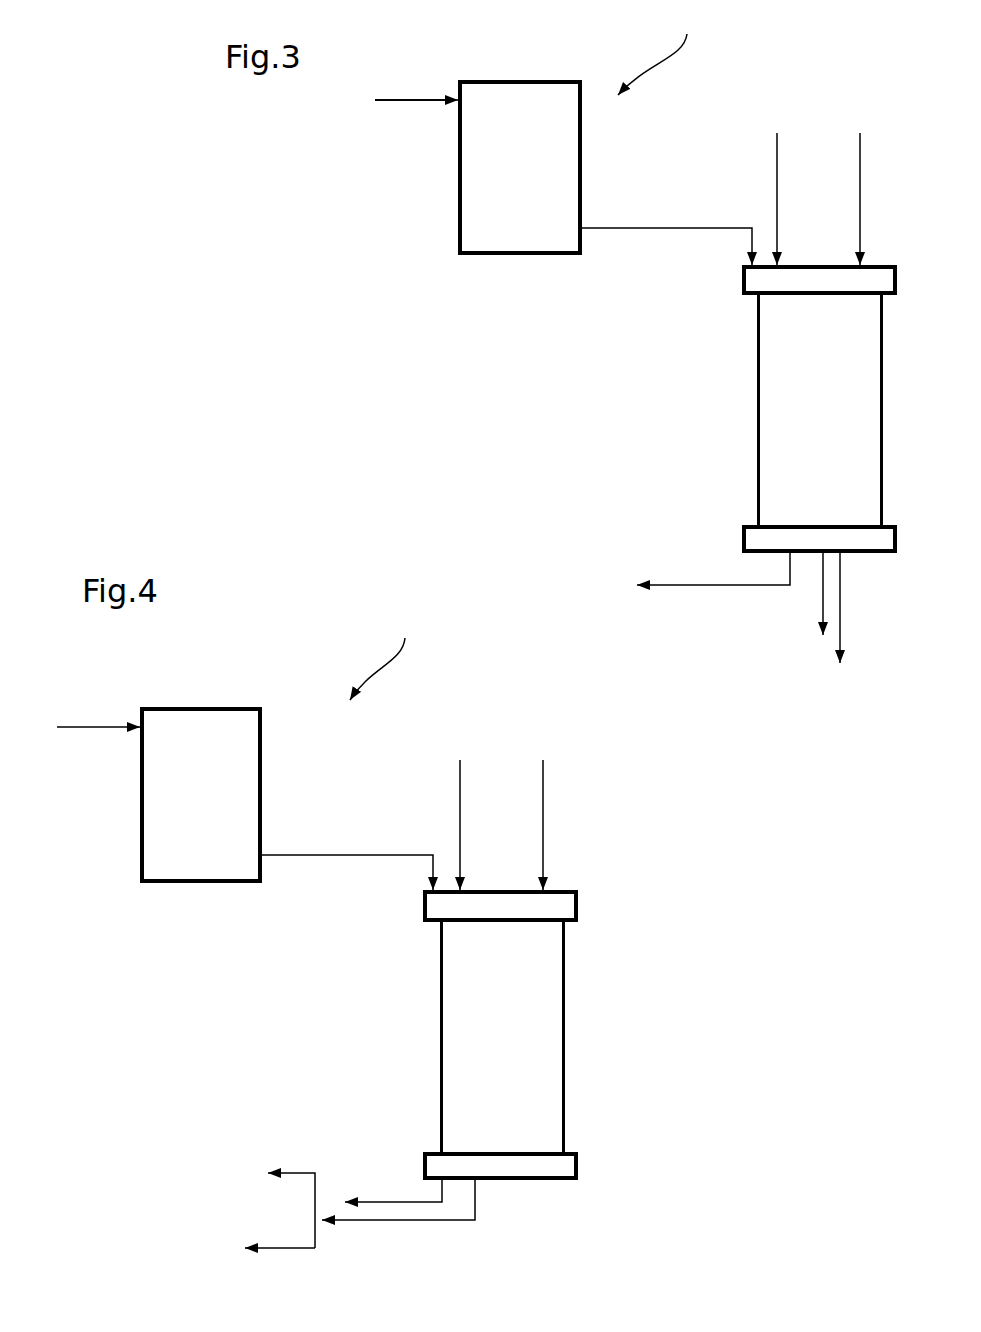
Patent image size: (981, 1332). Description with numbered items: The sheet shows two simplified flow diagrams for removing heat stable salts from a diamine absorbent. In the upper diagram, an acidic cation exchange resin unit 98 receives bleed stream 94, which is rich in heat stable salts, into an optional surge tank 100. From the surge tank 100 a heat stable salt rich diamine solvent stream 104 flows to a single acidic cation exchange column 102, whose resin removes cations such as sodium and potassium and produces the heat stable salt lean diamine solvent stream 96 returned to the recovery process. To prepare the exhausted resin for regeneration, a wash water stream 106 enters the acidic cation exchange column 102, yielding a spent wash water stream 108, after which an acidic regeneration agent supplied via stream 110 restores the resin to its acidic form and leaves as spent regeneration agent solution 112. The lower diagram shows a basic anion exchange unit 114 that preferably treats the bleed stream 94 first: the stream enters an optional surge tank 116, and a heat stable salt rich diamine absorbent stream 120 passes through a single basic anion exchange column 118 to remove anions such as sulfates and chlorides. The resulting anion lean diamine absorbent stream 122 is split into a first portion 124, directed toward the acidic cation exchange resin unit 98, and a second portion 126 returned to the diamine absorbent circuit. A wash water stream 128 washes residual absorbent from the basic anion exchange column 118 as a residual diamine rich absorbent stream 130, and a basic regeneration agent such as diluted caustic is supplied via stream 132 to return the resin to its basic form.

In FIG. 3, the bleed stream 94 is at (416, 118).
In FIG. 4, the bleed stream 94 is at (81, 729).
In FIG. 3, the heat stable salt lean diamine solvent stream 96 is at (695, 578).
In FIG. 3, the acidic cation exchange resin unit 98 is at (660, 52).
In FIG. 3, the surge tank 100 is at (538, 185).
In FIG. 3, the acidic cation exchange column 102 is at (837, 413).
In FIG. 3, the heat stable salt rich diamine solvent stream 104 is at (666, 228).
In FIG. 3, the wash water stream 106 is at (775, 185).
In FIG. 3, the spent wash water stream 108 is at (822, 598).
In FIG. 3, the regeneration agent stream 110 is at (861, 185).
In FIG. 3, the spent regeneration agent solution 112 is at (841, 608).
In FIG. 4, the basic anion exchange unit 114 is at (390, 655).
In FIG. 4, the surge tank 116 is at (222, 813).
In FIG. 4, the basic anion exchange column 118 is at (520, 1043).
In FIG. 4, the heat stable salt rich diamine absorbent stream 120 is at (338, 855).
In FIG. 3, the anion lean diamine absorbent stream 122 is at (407, 135).
In FIG. 4, the anion lean diamine absorbent stream 122 is at (400, 1222).
In FIG. 3, the first portion 124 is at (407, 153).
In FIG. 4, the first portion 124 is at (267, 1205).
In FIG. 4, the second portion 126 is at (255, 1250).
In FIG. 4, the wash water stream 128 is at (456, 812).
In FIG. 4, the residual diamine rich absorbent stream 130 is at (403, 1201).
In FIG. 4, the regeneration agent stream 132 is at (540, 812).